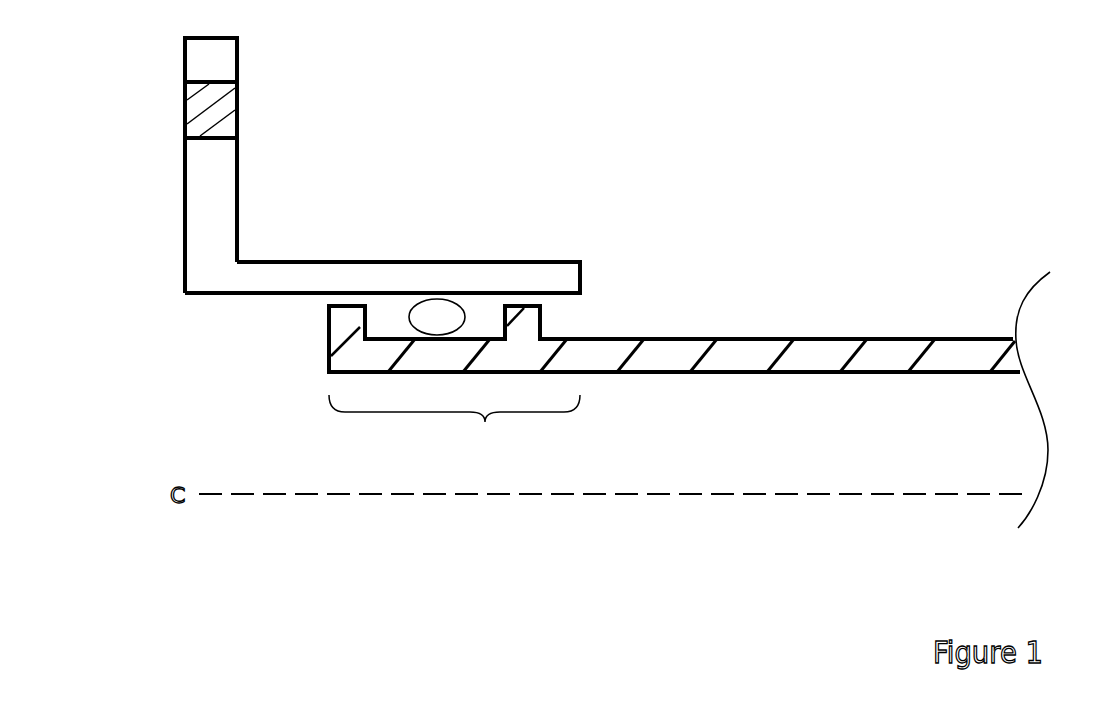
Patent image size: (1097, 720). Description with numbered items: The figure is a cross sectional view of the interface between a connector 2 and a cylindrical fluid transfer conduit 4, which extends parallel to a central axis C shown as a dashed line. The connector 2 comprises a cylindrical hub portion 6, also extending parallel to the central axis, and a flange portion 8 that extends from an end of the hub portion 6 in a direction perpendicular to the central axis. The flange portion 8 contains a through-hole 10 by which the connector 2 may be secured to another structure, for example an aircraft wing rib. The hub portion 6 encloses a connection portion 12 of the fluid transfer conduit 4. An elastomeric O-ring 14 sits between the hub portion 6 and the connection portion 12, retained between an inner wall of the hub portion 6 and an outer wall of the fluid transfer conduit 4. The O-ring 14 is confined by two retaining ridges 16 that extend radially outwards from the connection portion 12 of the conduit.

The connector 2 is at (335, 201).
The fluid transfer conduit 4 is at (725, 348).
The hub portion 6 is at (490, 273).
The flange portion 8 is at (215, 172).
The through-hole 10 is at (215, 110).
The connection portion 12 is at (454, 428).
The elastomeric O-ring 14 is at (432, 312).
The retaining ridges 16 is at (523, 323).